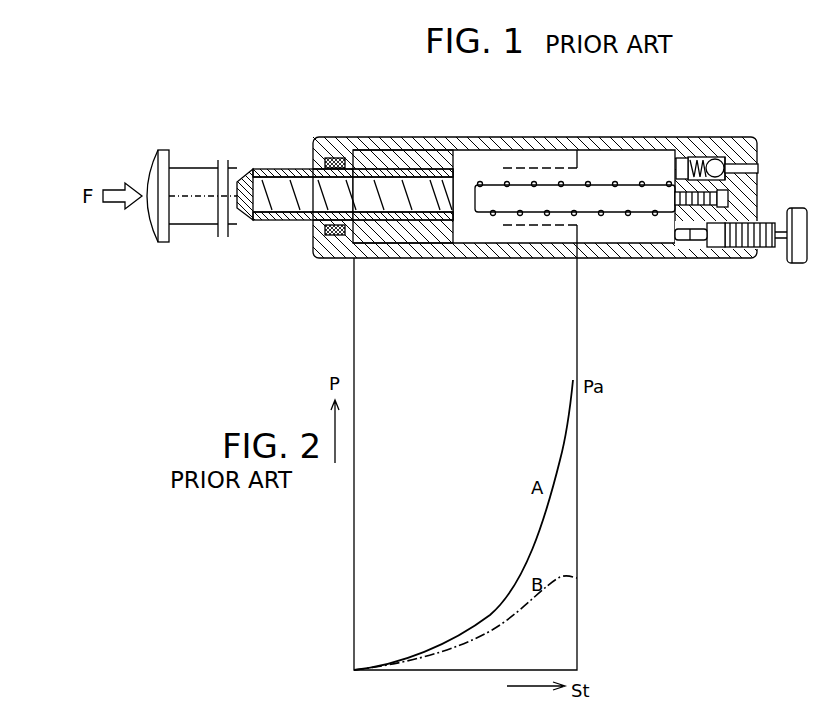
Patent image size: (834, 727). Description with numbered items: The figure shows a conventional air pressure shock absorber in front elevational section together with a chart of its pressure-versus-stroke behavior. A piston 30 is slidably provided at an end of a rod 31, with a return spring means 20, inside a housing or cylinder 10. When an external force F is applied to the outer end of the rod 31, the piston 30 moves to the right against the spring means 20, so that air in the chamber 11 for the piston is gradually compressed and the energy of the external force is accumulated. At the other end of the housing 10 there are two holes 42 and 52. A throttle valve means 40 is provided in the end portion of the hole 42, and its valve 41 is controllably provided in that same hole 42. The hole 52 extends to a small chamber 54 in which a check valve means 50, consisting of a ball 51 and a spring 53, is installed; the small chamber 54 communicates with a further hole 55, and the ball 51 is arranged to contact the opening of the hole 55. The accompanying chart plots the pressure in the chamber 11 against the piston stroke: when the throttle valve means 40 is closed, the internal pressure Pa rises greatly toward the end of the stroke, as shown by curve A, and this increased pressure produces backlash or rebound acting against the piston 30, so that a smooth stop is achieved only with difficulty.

The housing 10 is at (328, 145).
The chamber 11 is at (563, 162).
The return spring means 20 is at (470, 180).
The piston 30 is at (400, 160).
The rod 31 is at (235, 172).
The throttle valve means 40 is at (738, 259).
The valve 41 is at (707, 247).
The hole 42 is at (686, 242).
The check valve means 50 is at (722, 145).
The ball 51 is at (730, 160).
The hole 52 is at (678, 168).
The spring 53 is at (705, 158).
The small chamber 54 is at (713, 152).
The hole 55 is at (752, 169).